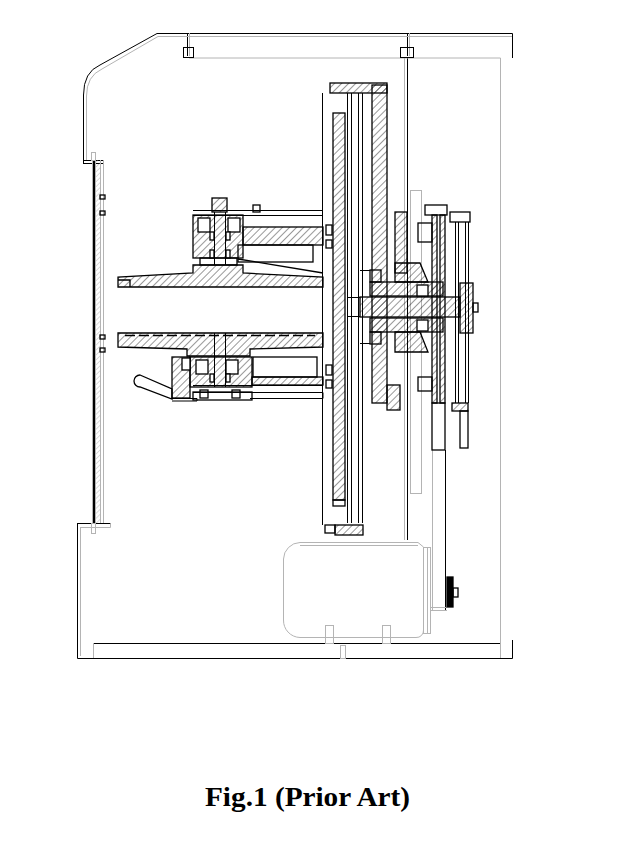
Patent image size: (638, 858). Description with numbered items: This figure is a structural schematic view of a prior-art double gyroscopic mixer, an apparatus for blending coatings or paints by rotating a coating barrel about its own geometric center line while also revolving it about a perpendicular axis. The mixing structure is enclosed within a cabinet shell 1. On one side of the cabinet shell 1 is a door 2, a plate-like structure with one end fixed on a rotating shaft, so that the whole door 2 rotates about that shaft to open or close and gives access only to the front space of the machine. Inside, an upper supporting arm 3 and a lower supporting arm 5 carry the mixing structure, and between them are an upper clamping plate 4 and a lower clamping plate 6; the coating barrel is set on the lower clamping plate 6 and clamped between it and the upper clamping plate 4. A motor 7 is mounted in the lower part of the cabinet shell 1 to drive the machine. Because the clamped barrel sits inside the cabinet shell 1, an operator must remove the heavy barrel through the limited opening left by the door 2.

The cabinet shell 1 is at (512, 400).
The door 2 is at (92, 363).
The upper supporting arm 3 is at (253, 227).
The upper clamping plate 4 is at (149, 267).
The lower supporting arm 5 is at (253, 398).
The lower clamping plate 6 is at (153, 355).
The motor 7 is at (385, 602).